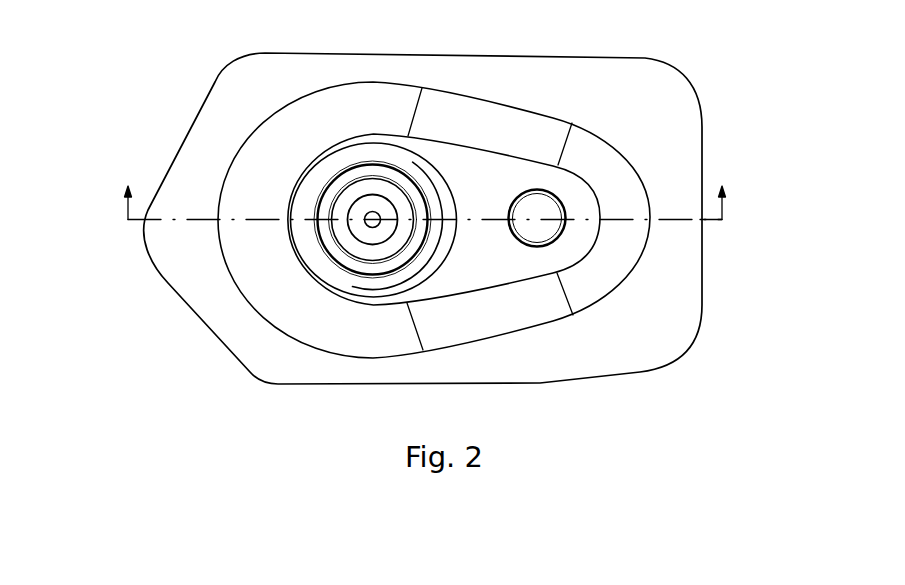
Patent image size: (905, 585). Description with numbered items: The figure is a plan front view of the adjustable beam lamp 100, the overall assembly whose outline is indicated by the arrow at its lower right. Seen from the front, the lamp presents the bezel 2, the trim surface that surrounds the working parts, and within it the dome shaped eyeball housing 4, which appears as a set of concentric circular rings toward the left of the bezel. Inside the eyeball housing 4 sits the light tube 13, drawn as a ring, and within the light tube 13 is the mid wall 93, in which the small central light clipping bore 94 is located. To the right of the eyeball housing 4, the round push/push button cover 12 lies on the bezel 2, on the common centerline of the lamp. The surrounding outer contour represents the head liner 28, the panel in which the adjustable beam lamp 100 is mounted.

The bezel 2 is at (480, 177).
The dome shaped eyeball housing 4 is at (360, 160).
The push/push button cover 12 is at (538, 217).
The light tube 13 is at (340, 187).
The head liner 28 is at (680, 118).
The mid wall 93 is at (364, 230).
The light clipping bore 94 is at (373, 221).
The adjustable beam lamp 100 is at (620, 300).